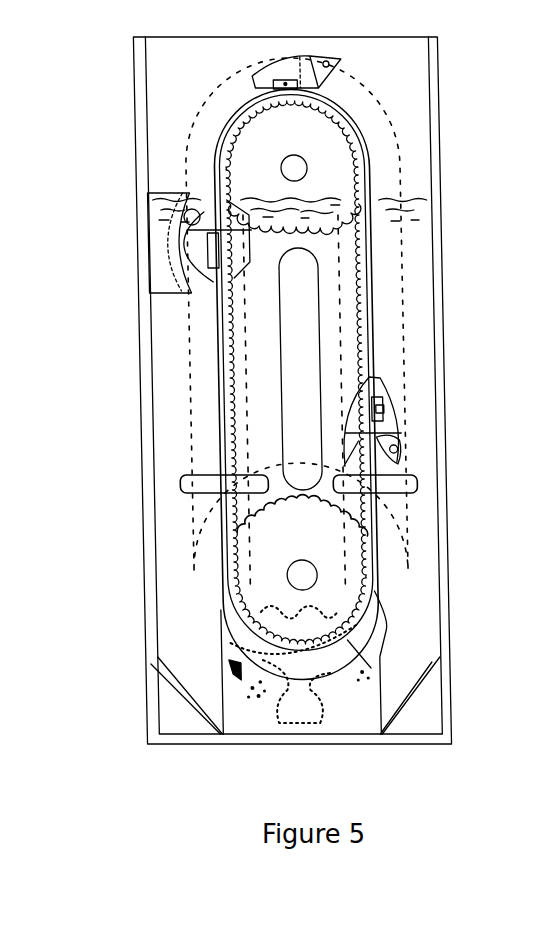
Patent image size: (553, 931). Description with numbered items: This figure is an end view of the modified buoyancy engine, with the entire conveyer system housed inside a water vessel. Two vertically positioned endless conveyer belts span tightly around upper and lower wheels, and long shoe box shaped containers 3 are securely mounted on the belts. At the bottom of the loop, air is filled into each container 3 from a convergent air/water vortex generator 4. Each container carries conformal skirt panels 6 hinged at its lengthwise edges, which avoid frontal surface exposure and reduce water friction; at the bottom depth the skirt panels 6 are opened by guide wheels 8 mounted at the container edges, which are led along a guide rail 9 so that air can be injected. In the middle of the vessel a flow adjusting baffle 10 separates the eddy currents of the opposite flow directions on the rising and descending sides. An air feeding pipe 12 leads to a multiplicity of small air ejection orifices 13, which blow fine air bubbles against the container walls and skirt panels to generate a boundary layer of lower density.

The shoe box shaped container 3 is at (387, 397).
The convergent air/water vortex generator 4 is at (314, 713).
The conformal skirt panel 6 is at (398, 438).
The guide wheel 8 is at (360, 676).
The guide rail 9 is at (165, 277).
The flow adjusting baffle 10 is at (318, 337).
The air feeding pipe 12 is at (418, 484).
The air ejection orifice 13 is at (186, 476).